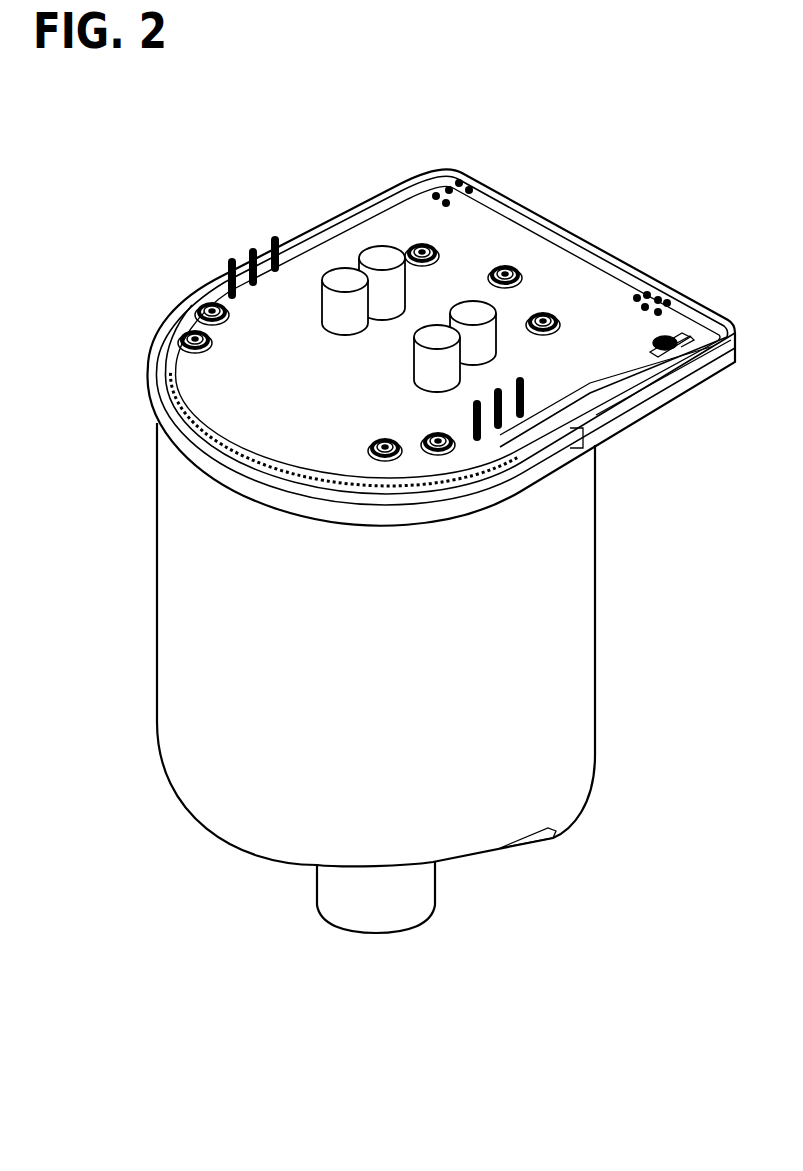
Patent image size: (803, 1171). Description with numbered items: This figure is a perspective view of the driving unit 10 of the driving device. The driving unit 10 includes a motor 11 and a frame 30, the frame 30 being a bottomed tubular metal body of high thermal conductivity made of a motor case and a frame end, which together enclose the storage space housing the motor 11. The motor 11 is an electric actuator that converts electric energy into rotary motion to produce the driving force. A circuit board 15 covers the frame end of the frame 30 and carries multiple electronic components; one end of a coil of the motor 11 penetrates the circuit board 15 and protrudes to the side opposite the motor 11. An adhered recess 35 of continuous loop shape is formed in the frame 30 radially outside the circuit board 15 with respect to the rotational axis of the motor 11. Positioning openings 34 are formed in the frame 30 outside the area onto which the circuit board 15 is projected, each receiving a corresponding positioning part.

The driving unit 10 is at (150, 816).
The motor 11 is at (372, 922).
The circuit board 15 is at (403, 207).
The frame 30 is at (568, 518).
The positioning opening 34 is at (680, 337).
The adhered recess 35 is at (640, 383).